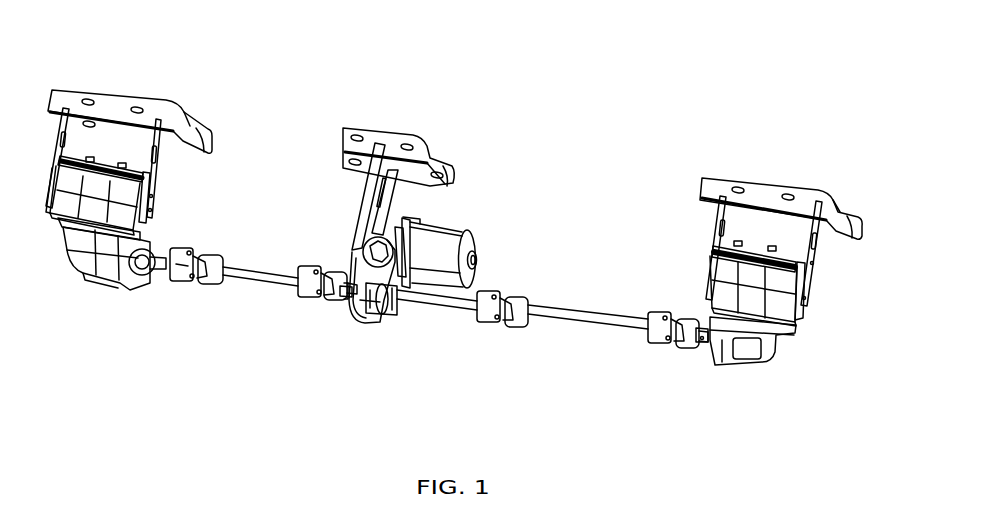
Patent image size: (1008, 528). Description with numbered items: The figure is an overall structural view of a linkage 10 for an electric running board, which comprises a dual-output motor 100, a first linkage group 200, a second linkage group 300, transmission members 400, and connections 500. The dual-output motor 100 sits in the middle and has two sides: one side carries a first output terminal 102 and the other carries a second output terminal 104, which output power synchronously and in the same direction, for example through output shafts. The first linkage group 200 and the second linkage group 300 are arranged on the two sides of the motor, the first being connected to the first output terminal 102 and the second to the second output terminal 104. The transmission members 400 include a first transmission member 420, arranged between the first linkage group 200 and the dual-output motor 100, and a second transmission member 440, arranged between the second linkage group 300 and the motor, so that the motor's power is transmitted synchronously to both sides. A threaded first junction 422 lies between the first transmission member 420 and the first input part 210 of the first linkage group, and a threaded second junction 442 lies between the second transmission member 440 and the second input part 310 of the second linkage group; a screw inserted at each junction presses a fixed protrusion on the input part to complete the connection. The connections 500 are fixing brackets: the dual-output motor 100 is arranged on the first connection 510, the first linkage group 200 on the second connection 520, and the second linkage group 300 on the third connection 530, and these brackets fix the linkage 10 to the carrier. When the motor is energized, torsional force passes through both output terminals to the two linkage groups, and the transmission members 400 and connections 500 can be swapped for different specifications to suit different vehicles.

The linkage 10 is at (527, 84).
The dual-output motor 100 is at (452, 225).
The first output terminal 102 is at (353, 299).
The second output terminal 104 is at (398, 308).
The first linkage group 200 is at (142, 205).
The first input part 210 is at (158, 262).
The second linkage group 300 is at (785, 290).
The second input part 310 is at (704, 338).
The transmission members 400 is at (96, 335).
The first transmission member 420 is at (232, 272).
The first junction 422 is at (185, 257).
The second transmission member 440 is at (573, 313).
The second junction 442 is at (650, 312).
The connections 500 is at (198, 331).
The first connection 510 is at (378, 137).
The second connection 520 is at (125, 108).
The third connection 530 is at (768, 193).